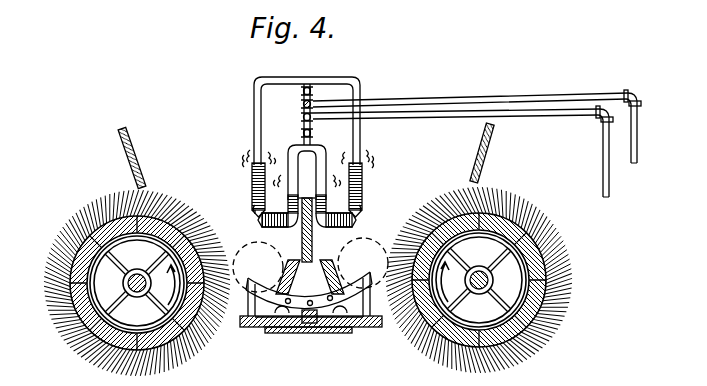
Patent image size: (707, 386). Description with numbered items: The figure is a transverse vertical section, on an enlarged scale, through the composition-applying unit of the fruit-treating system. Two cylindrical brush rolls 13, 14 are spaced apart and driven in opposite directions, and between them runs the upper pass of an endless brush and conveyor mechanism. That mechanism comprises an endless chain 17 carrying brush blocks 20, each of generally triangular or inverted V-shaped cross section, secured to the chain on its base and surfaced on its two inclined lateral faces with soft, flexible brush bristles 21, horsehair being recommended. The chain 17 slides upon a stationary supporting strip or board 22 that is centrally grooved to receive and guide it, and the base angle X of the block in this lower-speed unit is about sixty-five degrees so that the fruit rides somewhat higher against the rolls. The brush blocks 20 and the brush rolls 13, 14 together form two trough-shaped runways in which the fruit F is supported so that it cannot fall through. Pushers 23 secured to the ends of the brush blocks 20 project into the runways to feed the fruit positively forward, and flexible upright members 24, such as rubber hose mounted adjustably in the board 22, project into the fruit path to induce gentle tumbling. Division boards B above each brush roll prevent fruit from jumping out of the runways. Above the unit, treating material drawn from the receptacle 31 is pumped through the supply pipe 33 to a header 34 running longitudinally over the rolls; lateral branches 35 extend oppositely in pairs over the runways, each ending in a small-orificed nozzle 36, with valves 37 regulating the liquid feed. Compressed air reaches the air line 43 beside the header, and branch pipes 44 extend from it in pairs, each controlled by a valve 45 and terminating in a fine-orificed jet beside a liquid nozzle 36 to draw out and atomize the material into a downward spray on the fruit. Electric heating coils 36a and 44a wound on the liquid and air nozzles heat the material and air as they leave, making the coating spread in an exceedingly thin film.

The brush roll 13 is at (88, 355).
The brush roll 14 is at (568, 300).
The endless chain 17 is at (312, 325).
The brush block 20 is at (305, 275).
The brush bristles 21 is at (372, 343).
The stationary supporting strip or board 22 is at (288, 333).
The pusher 23 is at (363, 263).
The upright member 24 is at (243, 322).
The receptacle 31 is at (563, 96).
The supply pipe 33 is at (567, 121).
The header 34 is at (300, 117).
The lateral branch 35 is at (363, 176).
The nozzle 36 is at (252, 176).
The electric heating coil 36a is at (255, 208).
The valve 37 is at (312, 134).
The compressed air line 43 is at (312, 103).
The branch pipe 44 is at (347, 86).
The electric heating coil 44a is at (471, 160).
The valve 45 is at (309, 88).
The division board B is at (125, 163).
The fruit F is at (362, 216).
The base angle X is at (270, 333).